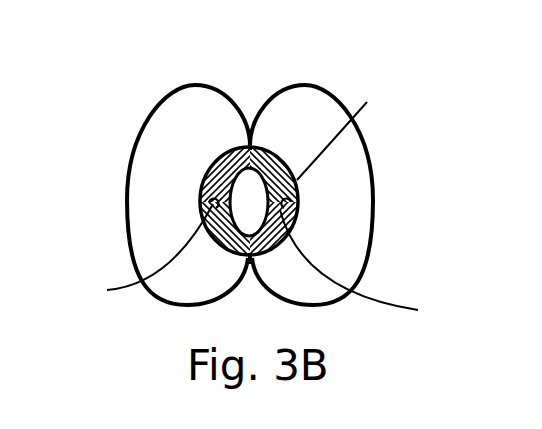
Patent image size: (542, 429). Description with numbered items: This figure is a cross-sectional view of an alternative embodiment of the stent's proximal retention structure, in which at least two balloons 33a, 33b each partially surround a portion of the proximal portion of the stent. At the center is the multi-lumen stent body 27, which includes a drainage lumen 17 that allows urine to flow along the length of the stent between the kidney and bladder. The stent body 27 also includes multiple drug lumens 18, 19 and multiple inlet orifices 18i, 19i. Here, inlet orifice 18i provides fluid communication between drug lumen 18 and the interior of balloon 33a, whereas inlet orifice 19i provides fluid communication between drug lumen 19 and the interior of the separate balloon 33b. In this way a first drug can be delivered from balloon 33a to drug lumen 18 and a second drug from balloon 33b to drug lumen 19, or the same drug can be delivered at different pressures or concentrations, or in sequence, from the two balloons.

The drainage lumen 17 is at (372, 264).
The drug lumen 18 is at (140, 256).
The inlet orifice 18i is at (205, 201).
The drug lumen 19 is at (351, 131).
The inlet orifice 19i is at (292, 201).
The multi-lumen stent body 27 is at (207, 172).
The balloon 33a is at (192, 115).
The balloon 33b is at (308, 115).